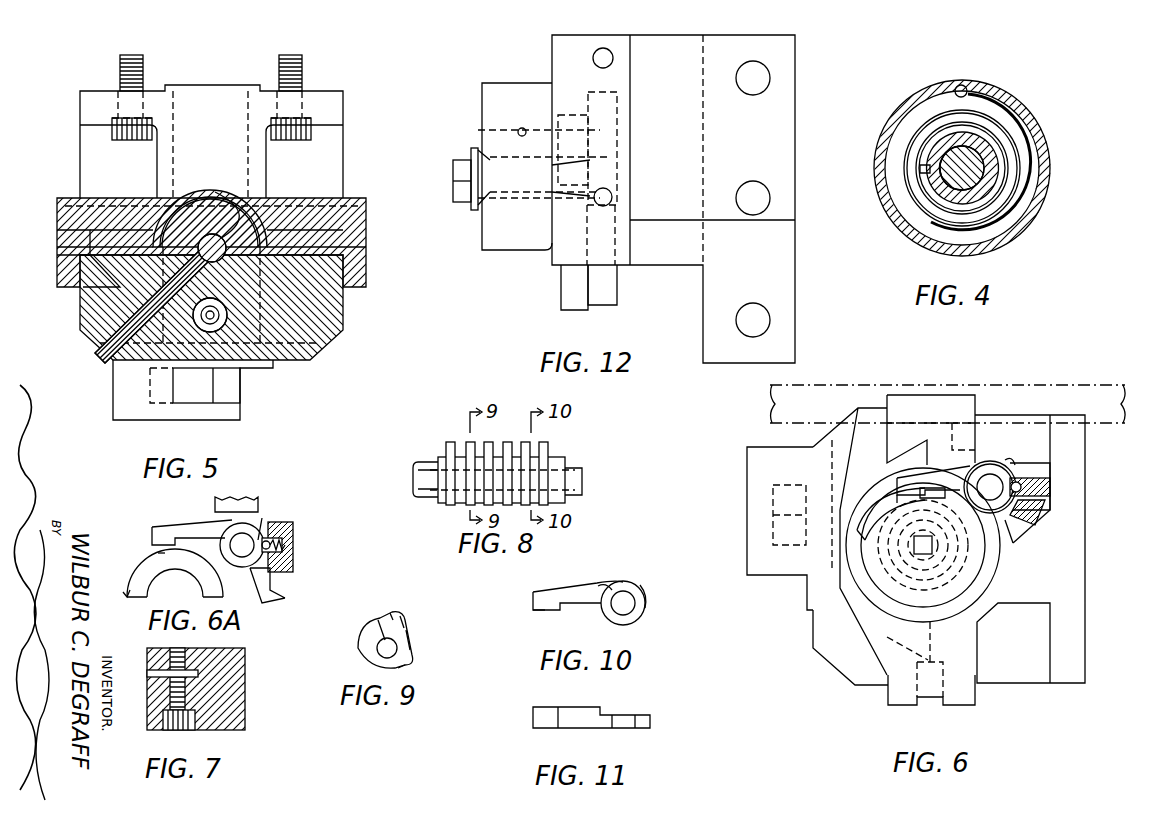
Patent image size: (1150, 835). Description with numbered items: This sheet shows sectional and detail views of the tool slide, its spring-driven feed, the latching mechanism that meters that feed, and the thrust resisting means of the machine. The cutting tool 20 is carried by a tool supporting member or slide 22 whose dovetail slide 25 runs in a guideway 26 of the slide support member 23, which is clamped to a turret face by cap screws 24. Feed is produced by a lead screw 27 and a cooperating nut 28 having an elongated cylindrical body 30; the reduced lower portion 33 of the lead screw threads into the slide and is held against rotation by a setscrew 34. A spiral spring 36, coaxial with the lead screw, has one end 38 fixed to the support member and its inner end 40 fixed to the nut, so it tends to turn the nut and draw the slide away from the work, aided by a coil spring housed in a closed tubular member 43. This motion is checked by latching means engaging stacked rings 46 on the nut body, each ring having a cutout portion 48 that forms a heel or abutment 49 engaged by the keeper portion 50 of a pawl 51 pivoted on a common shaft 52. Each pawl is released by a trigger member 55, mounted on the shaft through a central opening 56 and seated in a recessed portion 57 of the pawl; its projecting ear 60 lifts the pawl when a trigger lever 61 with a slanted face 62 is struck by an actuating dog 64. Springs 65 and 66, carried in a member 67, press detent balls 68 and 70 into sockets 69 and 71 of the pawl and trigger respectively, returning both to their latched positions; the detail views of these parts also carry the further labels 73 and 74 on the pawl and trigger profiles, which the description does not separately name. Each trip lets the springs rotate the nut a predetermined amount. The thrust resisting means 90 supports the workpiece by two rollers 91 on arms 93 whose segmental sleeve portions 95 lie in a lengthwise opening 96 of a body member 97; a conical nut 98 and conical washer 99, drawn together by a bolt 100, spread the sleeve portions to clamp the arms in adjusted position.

In FIG. 5, the turning or cutting tool 20 is at (205, 392).
In FIG. 5, the tool supporting member or slide 22 is at (343, 305).
In FIG. 5, the slide support member 23 is at (366, 212).
In FIG. 5, the cap screws 24 is at (143, 66).
In FIG. 5, the dovetail slide 25 is at (95, 285).
In FIG. 5, the guideway 26 is at (60, 276).
In FIG. 4, the lead screw 27 is at (980, 172).
In FIG. 4, the nut 28 is at (1000, 158).
In FIG. 4, the elongated cylindrical body 30 is at (990, 143).
In FIG. 5, the lower portion of the lead screw 33 is at (236, 207).
In FIG. 5, the setscrew 34 is at (125, 348).
In FIG. 4, the spiral spring 36 is at (1020, 205).
In FIG. 4, the end of spiral spring 38 is at (965, 87).
In FIG. 4, the inner end of spiral spring 40 is at (922, 170).
In FIG. 5, the tubular member 43 is at (235, 335).
In FIG. 6, the stacked rings 46 is at (886, 490).
In FIG. 6A, the stacked rings 46 is at (152, 556).
In FIG. 6, the cutout portion 48 is at (941, 496).
In FIG. 6A, the cutout portion 48 is at (153, 556).
In FIG. 6A, the heel or abutment 49 is at (165, 553).
In FIG. 6, the keeper portion 50 is at (912, 482).
In FIG. 10, the keeper portion 50 is at (538, 612).
In FIG. 6, the pawl 51 is at (955, 476).
In FIG. 6A, the pawl 51 is at (176, 536).
In FIG. 8, the pawl 51 is at (562, 462).
In FIG. 10, the pawl 51 is at (586, 592).
In FIG. 11, the pawl 51 is at (590, 714).
In FIG. 6, the common shaft 52 is at (995, 480).
In FIG. 6, the trigger member 55 is at (1008, 462).
In FIG. 9, the trigger member 55 is at (366, 636).
In FIG. 9, the central opening 56 is at (385, 640).
In FIG. 10, the recessed portion 57 is at (620, 575).
In FIG. 11, the recessed portion 57 is at (625, 714).
In FIG. 9, the projecting ear 60 is at (360, 656).
In FIG. 6A, the trigger lever 61 is at (263, 516).
In FIG. 9, the trigger lever 61 is at (404, 620).
In FIG. 9, the slanted face 62 is at (405, 596).
In FIG. 6, the actuating abutment member or dog 64 is at (990, 445).
In FIG. 6A, the actuating abutment member or dog 64 is at (240, 495).
In FIG. 7, the actuating abutment member or dog 64 is at (245, 698).
In FIG. 6, the spring 65 is at (1050, 487).
In FIG. 6A, the spring 65 is at (285, 545).
In FIG. 6, the spring 66 is at (1042, 506).
In FIG. 6, the member 67 is at (1035, 500).
In FIG. 6A, the member 67 is at (278, 598).
In FIG. 6, the detent ball 68 is at (1030, 470).
In FIG. 6A, the detent ball 68 is at (280, 522).
In FIG. 6A, the receiving notch or socket 69 is at (242, 518).
In FIG. 10, the receiving notch or socket 69 is at (645, 603).
In FIG. 6, the detent ball 70 is at (1015, 535).
In FIG. 9, the receiving notch or socket 71 is at (403, 664).
In FIG. 10, the roller pin 73 is at (642, 590).
In FIG. 9, the cam face 74 is at (409, 636).
In FIG. 12, the thrust resisting means 90 is at (518, 260).
In FIG. 12, the rollers 91 is at (572, 112).
In FIG. 12, the arms 93 is at (618, 126).
In FIG. 12, the segmental sleeve portions 95 is at (478, 130).
In FIG. 12, the lengthwise opening 96 is at (522, 128).
In FIG. 12, the body member 97 is at (672, 42).
In FIG. 12, the conical nut 98 is at (620, 160).
In FIG. 12, the conical washer 99 is at (474, 156).
In FIG. 12, the bolt 100 is at (457, 190).